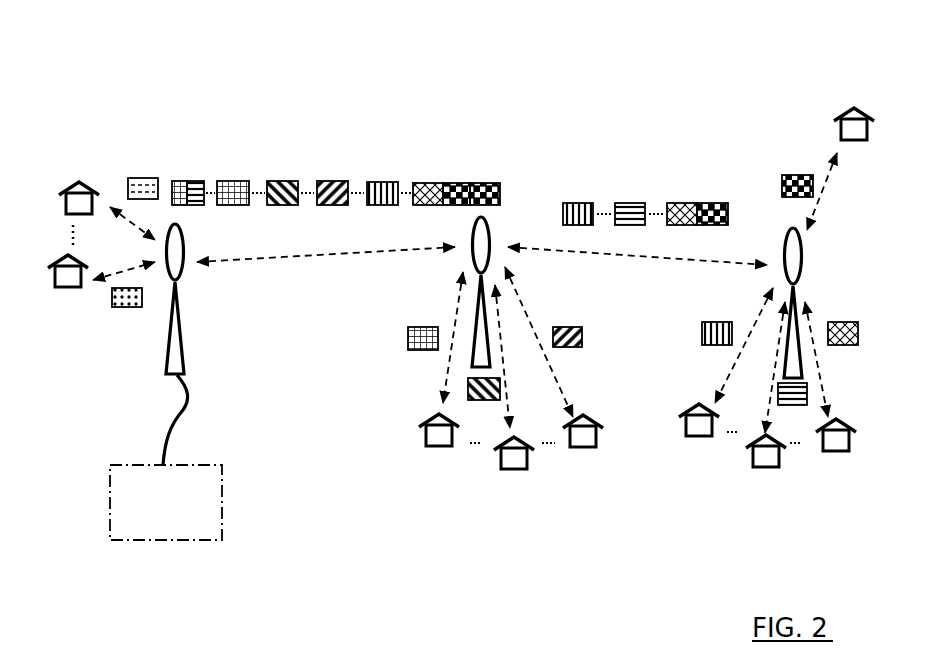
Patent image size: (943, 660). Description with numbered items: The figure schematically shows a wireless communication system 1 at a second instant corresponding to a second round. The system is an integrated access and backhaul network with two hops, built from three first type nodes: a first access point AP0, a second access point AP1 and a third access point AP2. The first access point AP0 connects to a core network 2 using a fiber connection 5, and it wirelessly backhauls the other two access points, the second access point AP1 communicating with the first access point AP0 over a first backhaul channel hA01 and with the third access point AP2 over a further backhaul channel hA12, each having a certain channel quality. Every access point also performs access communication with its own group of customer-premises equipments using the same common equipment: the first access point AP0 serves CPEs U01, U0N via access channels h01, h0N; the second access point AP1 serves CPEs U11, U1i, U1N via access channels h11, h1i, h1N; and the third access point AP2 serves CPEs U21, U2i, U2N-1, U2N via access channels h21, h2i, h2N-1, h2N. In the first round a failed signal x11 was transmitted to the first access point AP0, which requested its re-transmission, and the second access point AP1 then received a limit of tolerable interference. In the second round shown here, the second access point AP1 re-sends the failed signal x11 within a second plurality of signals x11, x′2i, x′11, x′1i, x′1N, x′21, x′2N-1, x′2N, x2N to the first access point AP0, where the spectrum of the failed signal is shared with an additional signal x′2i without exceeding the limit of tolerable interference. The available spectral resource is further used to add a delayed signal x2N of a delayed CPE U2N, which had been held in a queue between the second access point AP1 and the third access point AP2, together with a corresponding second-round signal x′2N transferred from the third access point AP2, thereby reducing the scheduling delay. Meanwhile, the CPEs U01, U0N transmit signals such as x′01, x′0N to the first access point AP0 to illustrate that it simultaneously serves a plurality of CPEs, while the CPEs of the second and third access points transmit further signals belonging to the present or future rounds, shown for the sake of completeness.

The wireless communication system 1 is at (298, 70).
The core network 2 is at (167, 527).
The fiber connection 5 is at (187, 396).
The first access point AP0 is at (194, 287).
The second access point AP1 is at (500, 224).
The third access point AP2 is at (781, 237).
The customer-premises equipment U0N is at (74, 195).
The customer-premises equipment U01 is at (62, 289).
The customer-premises equipment U11 is at (430, 430).
The customer-premises equipment U1i is at (515, 465).
The customer-premises equipment U1N is at (590, 440).
The customer-premises equipment U21 is at (690, 430).
The customer-premises equipment U2i is at (770, 460).
The customer-premises equipment U2N-1 is at (835, 445).
The delayed customer-premises equipment U2N is at (848, 112).
The signal x′0N is at (142, 178).
The failed signal x11 is at (178, 181).
The additional signal x′2i is at (193, 181).
The signal x′11 is at (240, 181).
The signal x′1i is at (292, 181).
The signal x′1N is at (340, 181).
The signal x′21 is at (390, 182).
The signal x′2N-1 is at (427, 183).
The corresponding signal x′2N is at (452, 183).
The delayed signal x2N is at (481, 183).
The signal x′01 is at (125, 307).
The access channel h0N is at (122, 214).
The access channel h01 is at (135, 270).
The first backhaul channel hA01 is at (337, 252).
The backhaul channel hA12 is at (733, 261).
The access channel h11 is at (447, 380).
The access channel h1i is at (497, 323).
The access channel h1N is at (530, 308).
The access channel h21 is at (722, 398).
The access channel h2i is at (773, 370).
The access channel h2N-1 is at (830, 377).
The access channel h2N is at (822, 194).